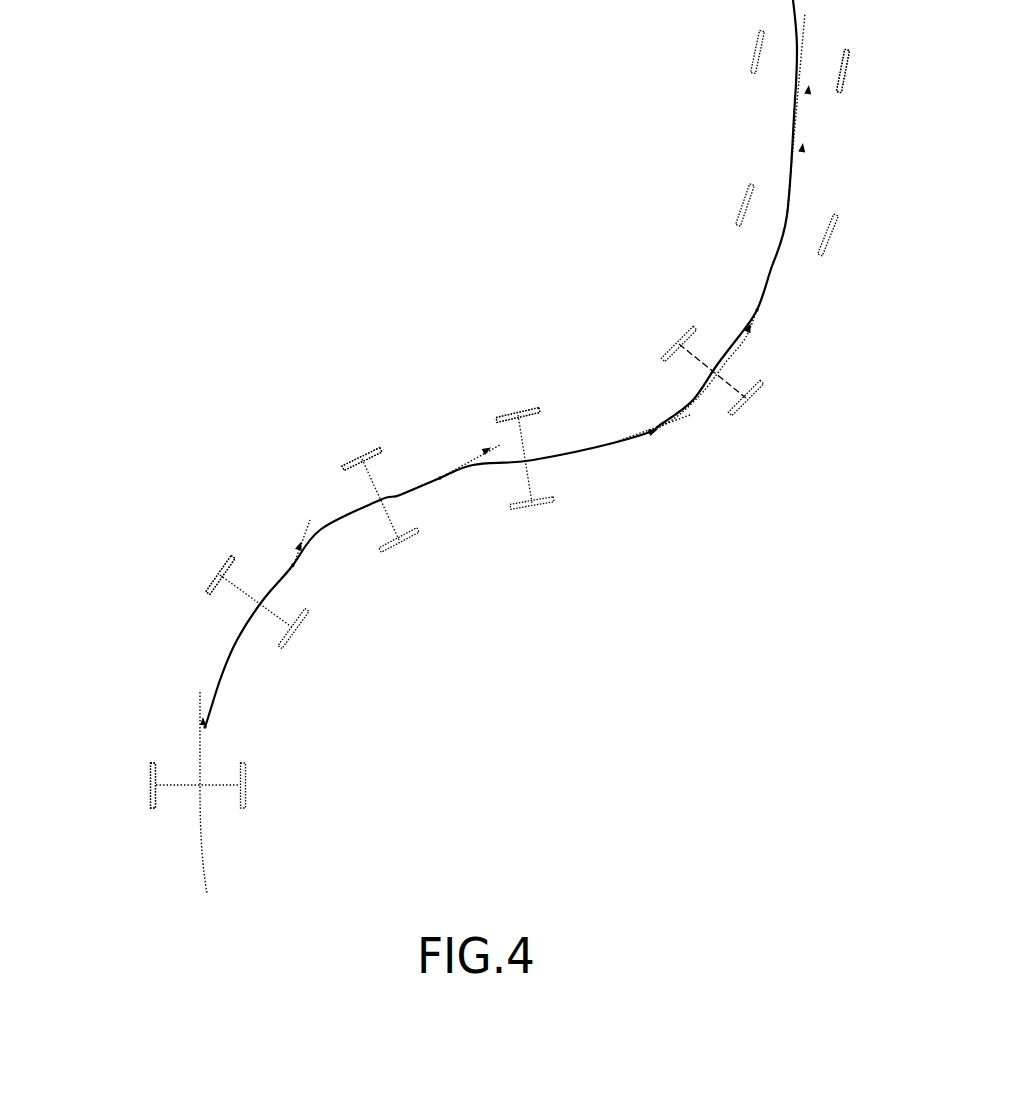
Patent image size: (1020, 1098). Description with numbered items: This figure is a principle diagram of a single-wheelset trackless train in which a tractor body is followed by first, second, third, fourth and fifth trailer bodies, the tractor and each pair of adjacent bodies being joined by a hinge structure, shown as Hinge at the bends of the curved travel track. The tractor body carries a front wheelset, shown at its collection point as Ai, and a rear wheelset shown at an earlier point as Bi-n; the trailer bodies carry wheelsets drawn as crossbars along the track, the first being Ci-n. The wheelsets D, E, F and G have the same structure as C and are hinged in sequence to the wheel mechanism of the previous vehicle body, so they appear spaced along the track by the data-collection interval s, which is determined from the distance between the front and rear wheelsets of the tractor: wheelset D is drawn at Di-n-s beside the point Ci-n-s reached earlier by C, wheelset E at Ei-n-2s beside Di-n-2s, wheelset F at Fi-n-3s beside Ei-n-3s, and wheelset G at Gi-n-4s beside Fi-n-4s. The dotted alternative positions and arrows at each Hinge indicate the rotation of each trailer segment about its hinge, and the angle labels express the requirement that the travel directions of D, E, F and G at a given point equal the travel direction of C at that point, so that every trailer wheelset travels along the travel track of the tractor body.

The front wheelset of tractor body Ai is at (860, 76).
The rear wheelset of tractor body Bi-n is at (820, 232).
The first trailer wheelset Ci-n is at (677, 335).
The second trailer wheelset Di-n-s is at (517, 412).
The first trailer wheelset at delayed point Ci-n-s is at (507, 408).
The third trailer wheelset Ei-n-2s is at (362, 453).
The second trailer wheelset at delayed point Di-n-2s is at (360, 456).
The fourth trailer wheelset Fi-n-3s is at (220, 575).
The third trailer wheelset at delayed point Ei-n-3s is at (215, 578).
The fifth trailer wheelset Gi-n-4s is at (148, 785).
The fourth trailer wheelset at delayed point Fi-n-4s is at (148, 785).
The hinge structure Hinge is at (757, 310).